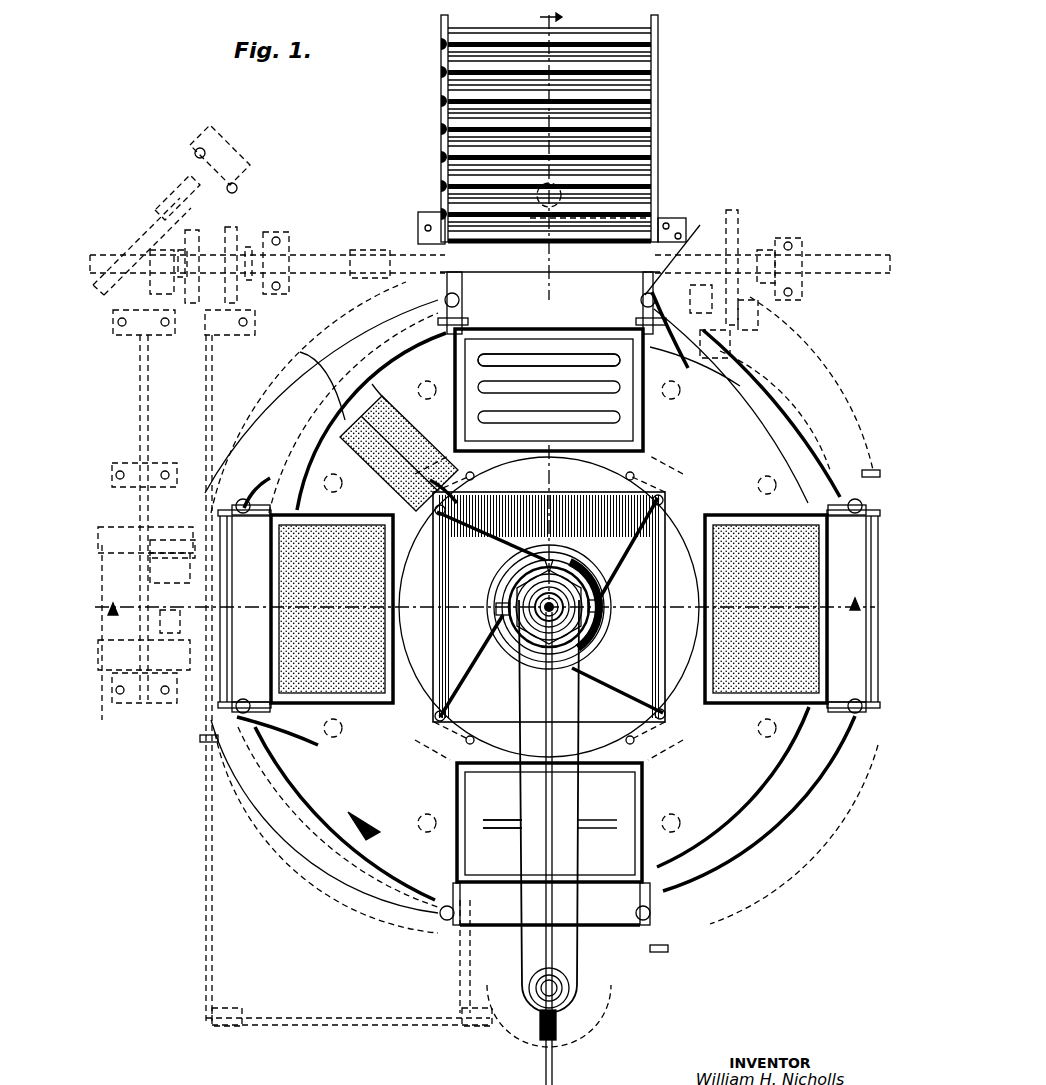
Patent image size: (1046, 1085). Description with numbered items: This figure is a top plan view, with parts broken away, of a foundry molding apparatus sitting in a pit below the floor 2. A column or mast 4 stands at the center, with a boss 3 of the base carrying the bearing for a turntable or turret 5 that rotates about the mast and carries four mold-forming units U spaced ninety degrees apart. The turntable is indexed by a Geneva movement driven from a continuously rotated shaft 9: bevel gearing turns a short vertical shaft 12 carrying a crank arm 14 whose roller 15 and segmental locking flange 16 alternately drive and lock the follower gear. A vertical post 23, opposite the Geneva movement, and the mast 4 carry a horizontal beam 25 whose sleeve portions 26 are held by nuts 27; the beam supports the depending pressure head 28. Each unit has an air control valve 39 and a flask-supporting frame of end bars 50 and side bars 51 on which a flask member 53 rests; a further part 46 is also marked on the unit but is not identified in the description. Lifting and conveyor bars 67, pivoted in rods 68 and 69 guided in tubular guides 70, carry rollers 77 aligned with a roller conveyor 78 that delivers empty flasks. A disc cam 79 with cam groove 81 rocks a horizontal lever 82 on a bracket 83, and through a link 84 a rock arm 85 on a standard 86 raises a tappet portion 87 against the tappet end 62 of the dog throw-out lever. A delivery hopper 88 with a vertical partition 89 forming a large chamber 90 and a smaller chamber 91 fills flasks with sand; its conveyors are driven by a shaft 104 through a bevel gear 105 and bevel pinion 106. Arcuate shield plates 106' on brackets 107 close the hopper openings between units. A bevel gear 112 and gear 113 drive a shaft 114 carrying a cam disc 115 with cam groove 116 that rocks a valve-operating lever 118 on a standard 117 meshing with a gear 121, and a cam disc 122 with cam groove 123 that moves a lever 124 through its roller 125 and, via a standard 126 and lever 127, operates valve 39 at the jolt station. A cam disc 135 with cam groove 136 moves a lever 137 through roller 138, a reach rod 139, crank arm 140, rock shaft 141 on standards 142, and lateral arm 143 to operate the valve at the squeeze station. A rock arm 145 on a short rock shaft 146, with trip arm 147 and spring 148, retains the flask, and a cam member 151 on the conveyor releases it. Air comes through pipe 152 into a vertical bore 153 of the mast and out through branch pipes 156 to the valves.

The floor 2 is at (405, 368).
The boss 3 is at (477, 597).
The column or mast 4 is at (590, 606).
The turntable or turret 5 is at (652, 580).
The shaft 9 is at (328, 252).
The short vertical shaft 12 is at (530, 300).
The crank arm 14 is at (658, 216).
The roller 15 is at (655, 190).
The segmental locking flange 16 is at (560, 300).
The vertical post 23 is at (535, 990).
The horizontal beam 25 is at (535, 798).
The sleeve portions 26 is at (570, 575).
The nuts 27 is at (570, 990).
The pressure head 28 is at (605, 798).
The air control valve 39 is at (482, 955).
The slot 46 is at (549, 362).
The end bars 50 is at (440, 900).
The inner and outer side bars 51 is at (492, 700).
The flask member 53 is at (592, 735).
The tappet end 62 is at (820, 785).
The lifting and conveyor bars 67 is at (440, 935).
The vertically reciprocating rod 68 is at (640, 918).
The vertically reciprocating rod 69 is at (470, 728).
The tubular guides 70 is at (432, 705).
The rollers 77 is at (855, 598).
The roller conveyor 78 is at (660, 72).
The disc cam 79 is at (735, 222).
The cam groove 81 is at (762, 238).
The horizontal lever 82 is at (723, 222).
The bracket 83 is at (735, 345).
The link 84 is at (755, 372).
The rock arm 85 is at (697, 299).
The standard 86 is at (679, 260).
The tappet portion 87 is at (755, 318).
The delivery hopper 88 is at (322, 380).
The vertical partition 89 is at (375, 386).
The large chamber 90 is at (352, 432).
The smaller chamber 91 is at (462, 488).
The shaft 104 is at (185, 160).
The bevel gear 105 is at (155, 215).
The bevel pinion 106 is at (169, 188).
The shield plate 106' is at (541, 610).
The brackets 107 is at (400, 760).
The bevel gear 112 is at (150, 232).
The gear 113 is at (133, 240).
The shaft 114 is at (140, 384).
The cam disc 115 is at (105, 705).
The cam groove 116 is at (134, 670).
The standard 117 is at (166, 612).
The valve-operating lever 118 is at (144, 647).
The gear 121 is at (282, 600).
The cam disc 122 is at (107, 598).
The cam groove 123 is at (143, 538).
The lever 124 is at (170, 568).
The roller 125 is at (160, 540).
The standard 126 is at (122, 463).
The lever 127 is at (165, 463).
The cam disc 135 is at (240, 228).
The cam groove 136 is at (205, 230).
The lever 137 is at (230, 340).
The roller 138 is at (272, 232).
The reach rod 139 is at (212, 890).
The crank arm 140 is at (230, 1008).
The rock shaft 141 is at (340, 1015).
The standards 142 is at (248, 1012).
The lateral arm 143 is at (460, 980).
The rock arm 145 is at (640, 912).
The short rock shaft 146 is at (660, 912).
The trip arm 147 is at (690, 945).
The spring 148 is at (680, 905).
The cam member 151 is at (420, 212).
The pipe 152 is at (530, 832).
The vertical bore 153 is at (433, 606).
The branch pipes 156 is at (596, 690).
The mold-forming units U is at (507, 567).